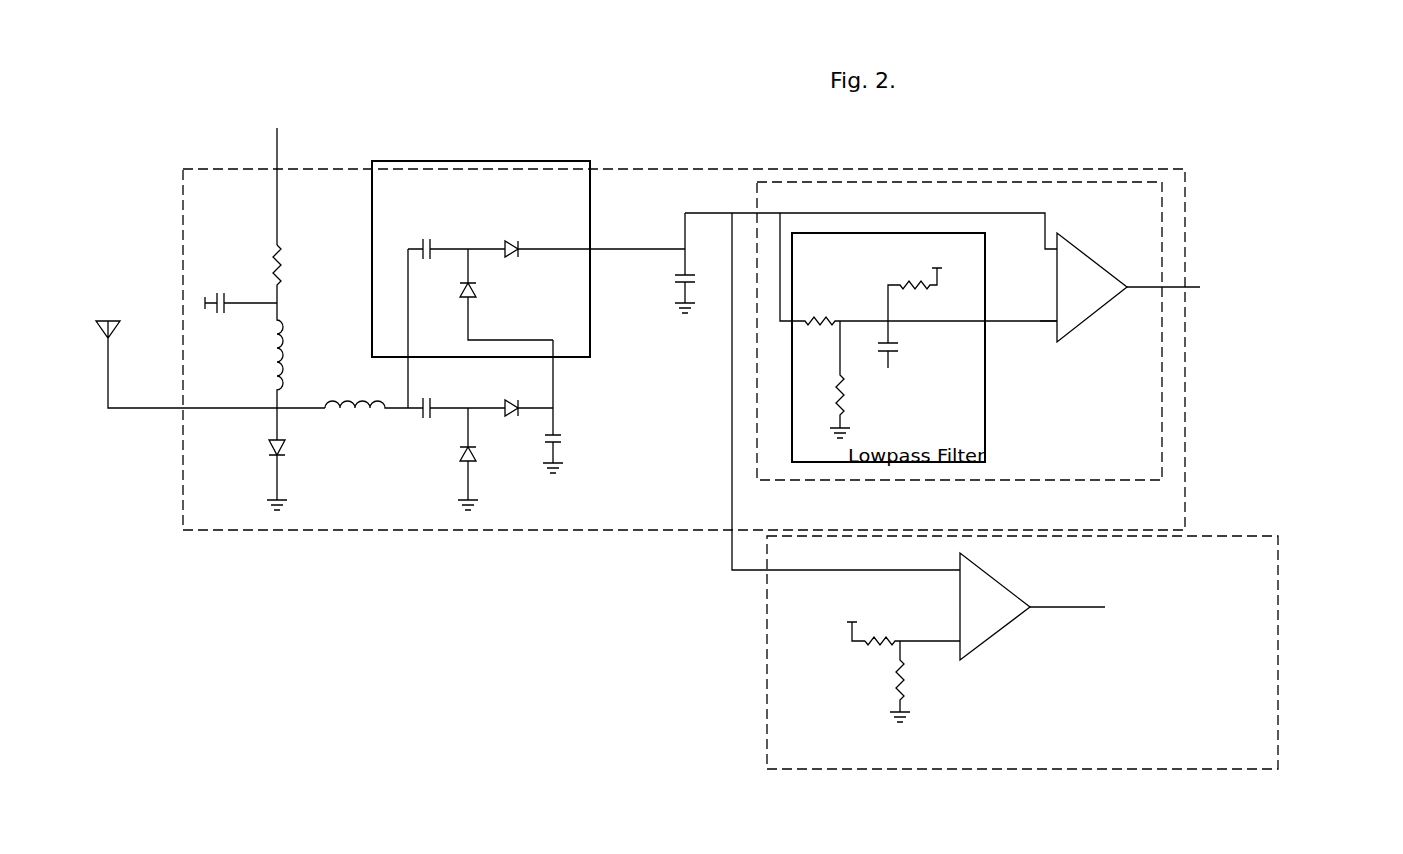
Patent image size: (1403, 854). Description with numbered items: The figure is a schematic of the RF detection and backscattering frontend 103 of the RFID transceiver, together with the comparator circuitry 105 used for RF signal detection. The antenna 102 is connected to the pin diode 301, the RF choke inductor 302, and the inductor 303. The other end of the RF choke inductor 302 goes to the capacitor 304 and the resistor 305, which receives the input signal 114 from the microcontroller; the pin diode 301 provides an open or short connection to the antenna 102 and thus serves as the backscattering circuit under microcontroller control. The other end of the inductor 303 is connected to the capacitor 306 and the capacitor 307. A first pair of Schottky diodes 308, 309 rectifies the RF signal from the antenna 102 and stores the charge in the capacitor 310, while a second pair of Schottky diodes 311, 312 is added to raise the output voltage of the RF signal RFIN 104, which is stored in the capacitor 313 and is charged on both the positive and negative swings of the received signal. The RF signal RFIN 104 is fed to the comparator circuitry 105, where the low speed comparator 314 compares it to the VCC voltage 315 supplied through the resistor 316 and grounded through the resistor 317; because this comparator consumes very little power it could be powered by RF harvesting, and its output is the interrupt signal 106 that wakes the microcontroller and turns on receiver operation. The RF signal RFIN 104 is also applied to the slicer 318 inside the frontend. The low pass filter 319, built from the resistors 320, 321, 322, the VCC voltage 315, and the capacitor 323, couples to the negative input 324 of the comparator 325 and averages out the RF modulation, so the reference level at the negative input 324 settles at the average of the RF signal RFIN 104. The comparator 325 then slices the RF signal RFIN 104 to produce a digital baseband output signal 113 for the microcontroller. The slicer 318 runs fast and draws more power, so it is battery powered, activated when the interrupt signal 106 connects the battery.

The antenna 102 is at (207, 345).
The RF detection and backscattering frontend 103 is at (684, 349).
The RF signal RFIN 104 is at (871, 391).
The comparator circuitry 105 is at (1022, 652).
The interrupt signal 106 is at (1215, 599).
The output signal 113 is at (1248, 277).
The input signal 114 is at (280, 170).
The pin diode 301 is at (298, 472).
The RF choke inductor 302 is at (298, 371).
The inductor 303 is at (372, 414).
The capacitor 304 is at (271, 263).
The resistor 305 is at (260, 296).
The capacitor 306 is at (457, 414).
The capacitor 307 is at (442, 315).
The Schottky diode 308 is at (485, 459).
The Schottky diode 309 is at (524, 394).
The capacitor 310 is at (572, 406).
The Schottky diode 311 is at (506, 294).
The Schottky diode 312 is at (590, 231).
The capacitor 313 is at (686, 263).
The low speed comparator 314 is at (1063, 611).
The VCC voltage 315 is at (834, 625).
The resistor 316 is at (912, 623).
The resistor 317 is at (927, 681).
The slicer 318 is at (1066, 389).
The low pass filter 319 is at (959, 338).
The resistor 320 is at (918, 269).
The resistor 321 is at (842, 379).
The resistor 322 is at (923, 278).
The capacitor 323 is at (917, 352).
The negative input 324 is at (1038, 335).
The comparator 325 is at (1129, 292).